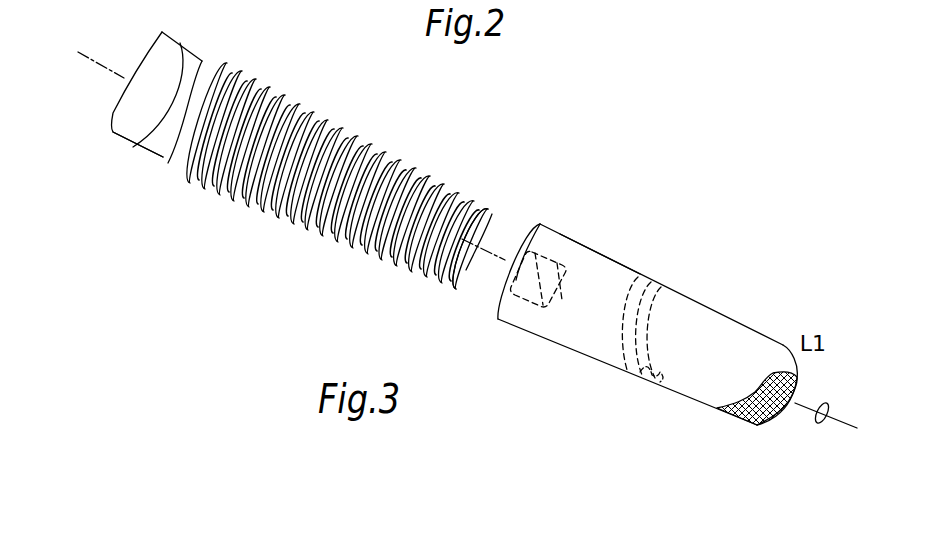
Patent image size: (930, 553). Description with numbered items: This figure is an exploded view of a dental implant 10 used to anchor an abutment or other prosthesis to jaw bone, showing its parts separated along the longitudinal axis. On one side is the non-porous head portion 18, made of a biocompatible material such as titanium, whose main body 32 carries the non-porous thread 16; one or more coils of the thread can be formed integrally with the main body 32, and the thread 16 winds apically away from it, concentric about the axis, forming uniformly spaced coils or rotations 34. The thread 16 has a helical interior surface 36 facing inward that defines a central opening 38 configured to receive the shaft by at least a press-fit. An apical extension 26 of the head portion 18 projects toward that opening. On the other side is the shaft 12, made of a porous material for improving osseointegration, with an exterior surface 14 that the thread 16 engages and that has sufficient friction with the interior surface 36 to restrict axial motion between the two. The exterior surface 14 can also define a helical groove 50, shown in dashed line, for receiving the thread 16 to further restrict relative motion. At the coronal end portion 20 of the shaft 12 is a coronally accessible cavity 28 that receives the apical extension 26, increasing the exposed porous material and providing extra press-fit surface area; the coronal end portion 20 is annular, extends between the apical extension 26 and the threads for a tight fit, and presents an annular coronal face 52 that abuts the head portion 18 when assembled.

The implant 10 is at (665, 152).
The shaft 12 is at (624, 299).
The exterior surface 14 is at (592, 250).
The non-porous thread 16 is at (337, 153).
The non-porous head portion 18 is at (171, 32).
The coronal end portion 20 is at (542, 226).
The apical extension 26 is at (337, 166).
The coronally accessible cavity 28 is at (525, 303).
The main body 32 is at (152, 155).
The coils or rotations 34 is at (322, 113).
The interior surface 36 is at (487, 211).
The central opening 38 is at (478, 235).
The helical groove 50 is at (637, 376).
The annular coronal face 52 is at (492, 305).